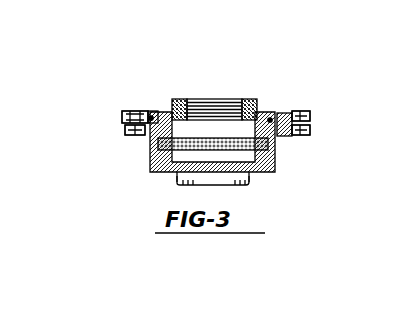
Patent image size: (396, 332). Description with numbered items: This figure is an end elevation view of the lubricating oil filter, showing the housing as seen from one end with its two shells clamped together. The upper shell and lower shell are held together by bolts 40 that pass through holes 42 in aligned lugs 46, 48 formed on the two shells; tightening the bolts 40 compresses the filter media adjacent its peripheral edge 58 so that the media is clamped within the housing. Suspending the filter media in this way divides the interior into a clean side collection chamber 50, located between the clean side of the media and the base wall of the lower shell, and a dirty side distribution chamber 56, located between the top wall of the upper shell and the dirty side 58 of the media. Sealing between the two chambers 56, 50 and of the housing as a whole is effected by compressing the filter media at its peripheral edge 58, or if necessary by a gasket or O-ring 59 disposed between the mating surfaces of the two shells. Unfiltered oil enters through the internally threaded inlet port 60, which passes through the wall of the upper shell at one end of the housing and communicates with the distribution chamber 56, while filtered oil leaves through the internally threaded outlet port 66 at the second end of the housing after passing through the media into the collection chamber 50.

The bolt 40 is at (143, 107).
The hole 42 is at (128, 136).
The lug 46 is at (310, 116).
The lug 48 is at (122, 115).
The clean side collection chamber 50 is at (252, 180).
The dirty side distribution chamber 56 is at (187, 128).
The dirty side of the filter media 58 is at (151, 143).
The gasket or O-ring 59 is at (151, 118).
The unfiltered oil inlet port 60 is at (216, 98).
The filtered oil outlet port 66 is at (177, 182).